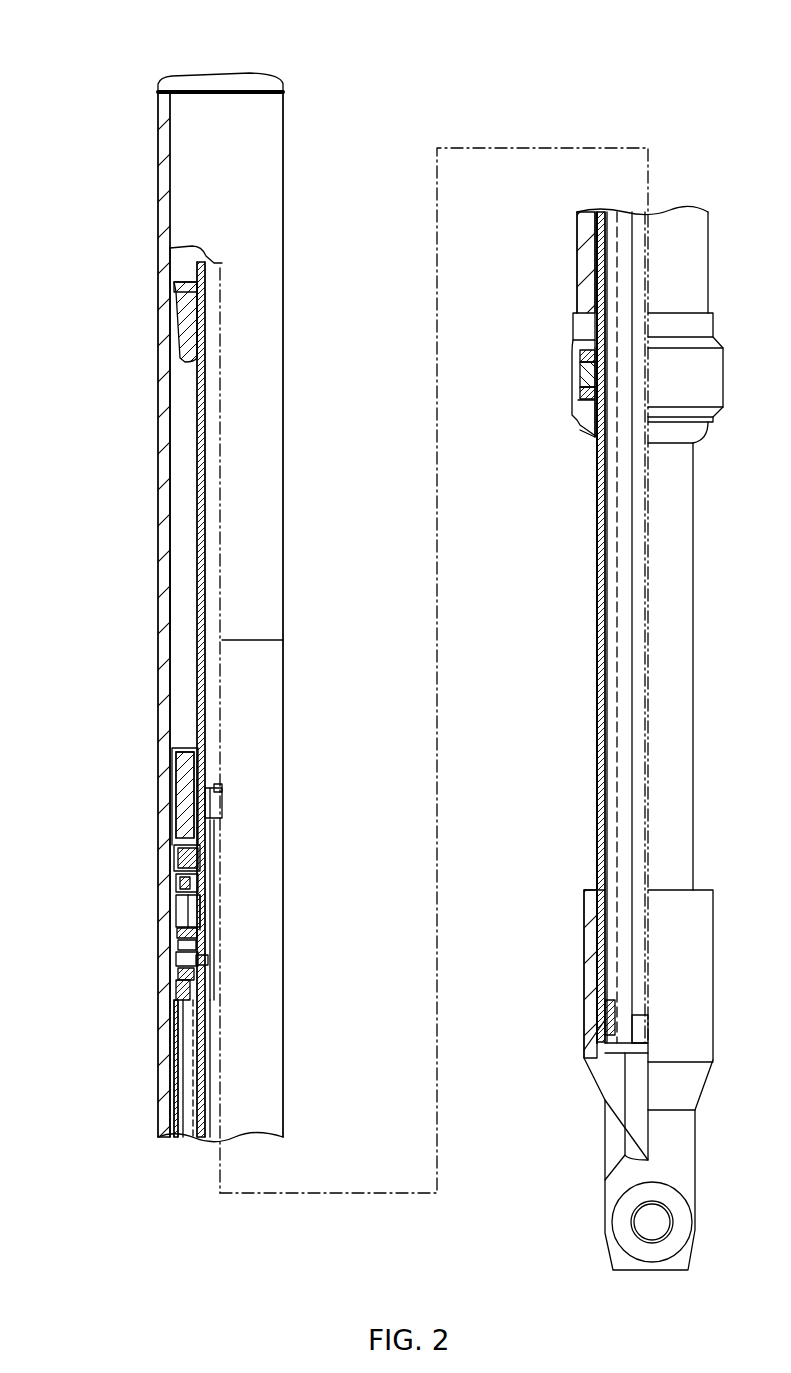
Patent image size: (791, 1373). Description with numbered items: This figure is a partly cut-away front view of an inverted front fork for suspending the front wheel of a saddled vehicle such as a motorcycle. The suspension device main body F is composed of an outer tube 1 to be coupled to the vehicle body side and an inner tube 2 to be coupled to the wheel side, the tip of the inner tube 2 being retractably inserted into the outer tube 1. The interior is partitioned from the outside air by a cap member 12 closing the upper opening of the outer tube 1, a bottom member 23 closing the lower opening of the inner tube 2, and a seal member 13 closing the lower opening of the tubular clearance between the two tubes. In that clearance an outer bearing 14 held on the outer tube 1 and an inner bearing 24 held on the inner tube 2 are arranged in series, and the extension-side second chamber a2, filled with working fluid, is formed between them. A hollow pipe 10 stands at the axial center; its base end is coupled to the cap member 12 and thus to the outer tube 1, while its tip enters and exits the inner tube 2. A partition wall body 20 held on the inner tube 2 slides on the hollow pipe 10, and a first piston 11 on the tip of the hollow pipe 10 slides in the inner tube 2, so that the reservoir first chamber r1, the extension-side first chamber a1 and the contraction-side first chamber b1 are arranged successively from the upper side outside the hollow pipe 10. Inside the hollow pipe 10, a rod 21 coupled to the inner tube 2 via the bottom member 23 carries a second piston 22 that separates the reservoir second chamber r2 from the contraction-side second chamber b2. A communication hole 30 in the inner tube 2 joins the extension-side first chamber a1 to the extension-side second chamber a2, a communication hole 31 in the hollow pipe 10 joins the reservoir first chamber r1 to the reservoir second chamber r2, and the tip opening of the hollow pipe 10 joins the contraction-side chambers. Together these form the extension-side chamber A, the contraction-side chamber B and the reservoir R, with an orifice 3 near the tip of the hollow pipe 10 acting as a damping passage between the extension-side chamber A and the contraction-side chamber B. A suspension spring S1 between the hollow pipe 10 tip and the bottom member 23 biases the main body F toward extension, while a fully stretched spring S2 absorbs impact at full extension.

The outer tube 1 is at (160, 286).
The cap member 12 is at (247, 80).
The suspension device main body F is at (288, 388).
The reservoir first chamber r1 is at (173, 462).
The reservoir second chamber r2 is at (220, 514).
The hollow pipe 10 is at (200, 566).
The communication hole 31 is at (200, 412).
The reservoir R is at (176, 600).
The inner bearing 24 is at (177, 783).
The second piston 22 is at (224, 800).
The contraction-side second chamber b2 is at (208, 838).
The partition wall body 20 is at (172, 860).
The orifice 3 is at (206, 886).
The communication hole 30 is at (177, 903).
The extension-side chamber A is at (203, 908).
The extension-side first chamber a1 is at (175, 926).
The fully stretched spring S2 is at (178, 944).
The first piston 11 is at (203, 948).
The suspension spring S1 is at (185, 977).
The extension-side second chamber a2 is at (178, 1048).
The contraction-side first chamber b1 is at (205, 1030).
The contraction-side chamber B is at (200, 1140).
The inner tube 2 is at (600, 726).
The rod 21 is at (640, 580).
The outer bearing 14 is at (577, 328).
The seal member 13 is at (577, 375).
The bottom member 23 is at (592, 963).